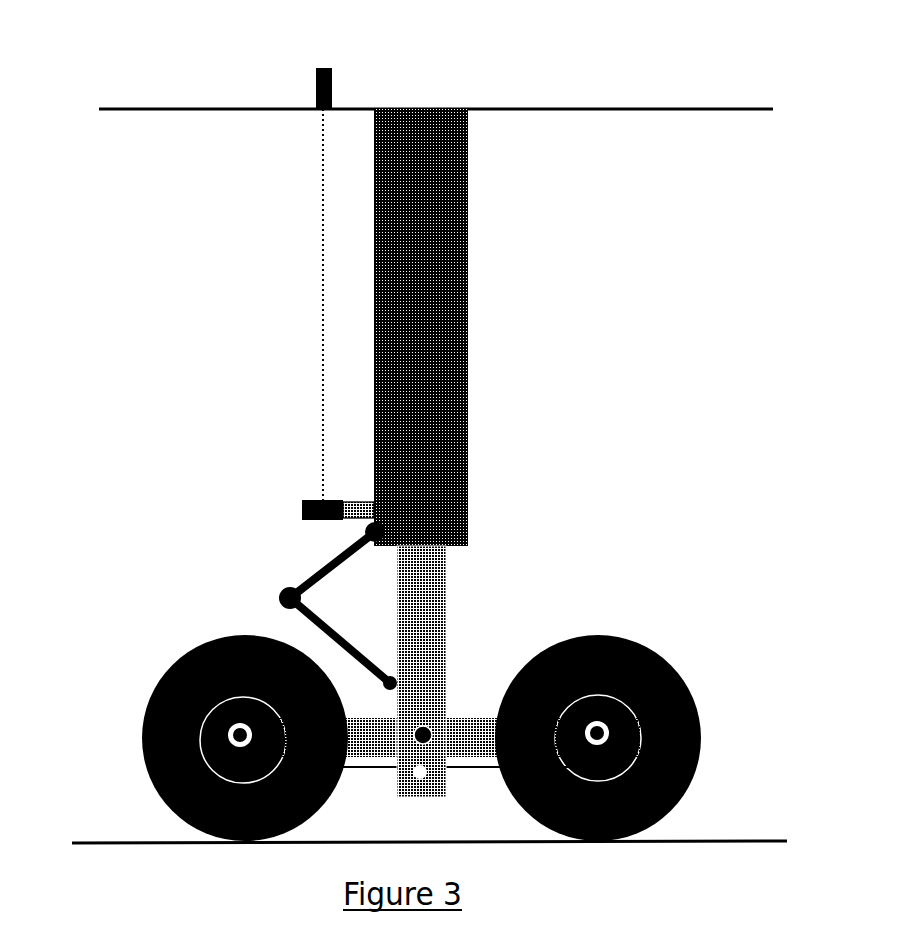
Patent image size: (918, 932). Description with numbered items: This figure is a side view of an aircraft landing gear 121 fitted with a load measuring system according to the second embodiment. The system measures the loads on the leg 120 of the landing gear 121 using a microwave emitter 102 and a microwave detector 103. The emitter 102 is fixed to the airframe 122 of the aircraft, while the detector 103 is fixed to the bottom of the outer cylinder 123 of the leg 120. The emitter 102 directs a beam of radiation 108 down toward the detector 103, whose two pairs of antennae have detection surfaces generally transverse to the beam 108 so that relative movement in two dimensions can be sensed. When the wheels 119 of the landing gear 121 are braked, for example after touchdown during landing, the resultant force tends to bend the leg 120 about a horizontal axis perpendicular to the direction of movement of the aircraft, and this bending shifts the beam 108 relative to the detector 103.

The microwave emitter 102 is at (315, 80).
The airframe 122 is at (225, 114).
The leg 120 is at (480, 235).
The beam of radiation 108 is at (323, 265).
The aircraft landing gear 121 is at (163, 357).
The microwave detector 103 is at (303, 508).
The outer cylinder 123 is at (457, 517).
The wheels 119 is at (170, 668).